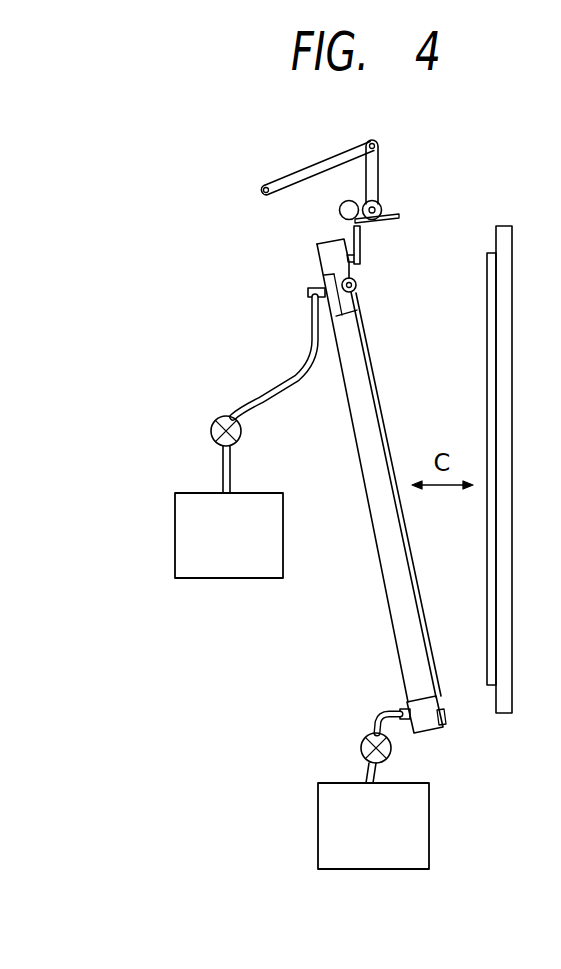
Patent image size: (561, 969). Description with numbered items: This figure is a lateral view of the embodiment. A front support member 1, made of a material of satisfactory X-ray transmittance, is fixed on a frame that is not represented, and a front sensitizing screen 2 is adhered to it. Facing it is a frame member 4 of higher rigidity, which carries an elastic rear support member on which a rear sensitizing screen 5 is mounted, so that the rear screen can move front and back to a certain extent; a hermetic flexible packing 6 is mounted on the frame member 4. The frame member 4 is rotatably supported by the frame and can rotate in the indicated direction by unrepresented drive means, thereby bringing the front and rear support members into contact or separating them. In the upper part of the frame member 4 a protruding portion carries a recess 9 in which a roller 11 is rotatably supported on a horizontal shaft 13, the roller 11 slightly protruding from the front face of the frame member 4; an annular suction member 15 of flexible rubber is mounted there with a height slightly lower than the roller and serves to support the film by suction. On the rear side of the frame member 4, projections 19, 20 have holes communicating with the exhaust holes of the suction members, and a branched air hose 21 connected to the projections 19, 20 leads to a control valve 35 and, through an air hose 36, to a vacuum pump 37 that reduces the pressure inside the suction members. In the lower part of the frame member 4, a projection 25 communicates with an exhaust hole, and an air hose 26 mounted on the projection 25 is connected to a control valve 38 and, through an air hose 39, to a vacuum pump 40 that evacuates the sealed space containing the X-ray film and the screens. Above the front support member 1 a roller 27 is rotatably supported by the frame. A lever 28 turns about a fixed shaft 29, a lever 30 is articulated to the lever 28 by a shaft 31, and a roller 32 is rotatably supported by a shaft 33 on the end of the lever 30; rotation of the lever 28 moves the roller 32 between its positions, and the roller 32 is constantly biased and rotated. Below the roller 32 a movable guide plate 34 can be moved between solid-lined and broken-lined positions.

The front support member 1 is at (505, 226).
The front sensitizing screen 2 is at (488, 402).
The frame member 4 is at (378, 508).
The rear sensitizing screen 5 is at (376, 360).
The hermetic flexible packing 6 is at (447, 721).
The recess 9 is at (323, 273).
The roller 11 is at (356, 290).
The horizontal shaft 13 is at (336, 330).
The annular suction member 15 is at (358, 283).
The projection 19 is at (259, 295).
The projection 20 is at (308, 292).
The branched air hose 21 is at (311, 348).
The projection 25 is at (403, 713).
The air hose 26 is at (375, 722).
The roller 27 is at (340, 212).
The lever 28 is at (316, 172).
The fixed shaft 29 is at (264, 186).
The lever 30 is at (382, 160).
The shaft 31 is at (378, 142).
The roller 32 is at (398, 217).
The shaft 33 is at (381, 202).
The movable guide plate 34 is at (363, 228).
The control valve 35 is at (212, 431).
The air hose 36 is at (232, 456).
The vacuum pump 37 is at (286, 497).
The control valve 38 is at (393, 750).
The air hose 39 is at (366, 768).
The vacuum pump 40 is at (431, 793).